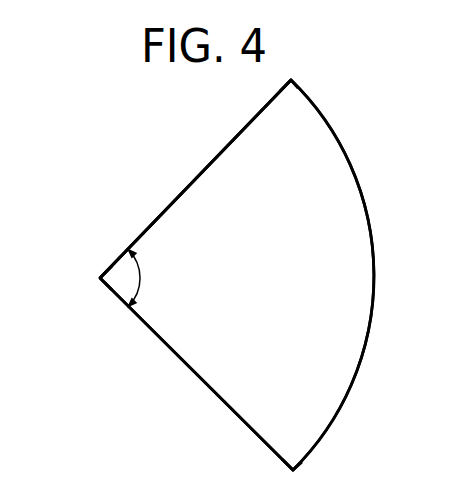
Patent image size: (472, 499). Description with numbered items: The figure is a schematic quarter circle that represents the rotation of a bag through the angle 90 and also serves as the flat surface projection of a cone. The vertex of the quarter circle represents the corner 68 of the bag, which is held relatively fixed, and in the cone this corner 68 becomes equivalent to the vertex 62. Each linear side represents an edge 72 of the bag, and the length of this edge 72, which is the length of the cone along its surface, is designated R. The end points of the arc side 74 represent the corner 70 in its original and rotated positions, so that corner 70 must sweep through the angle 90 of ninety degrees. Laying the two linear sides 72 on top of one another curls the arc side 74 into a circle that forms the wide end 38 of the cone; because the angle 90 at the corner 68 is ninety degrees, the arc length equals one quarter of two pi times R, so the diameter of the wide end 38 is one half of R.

The wide end 38 is at (372, 282).
The edge 72 is at (187, 188).
The arc side 74 is at (358, 183).
The corner 70 is at (293, 79).
The corner 68 is at (100, 277).
The vertex 62 is at (98, 283).
The length of the cone along the surface R is at (234, 136).
The 90 degree angle 90 is at (140, 278).